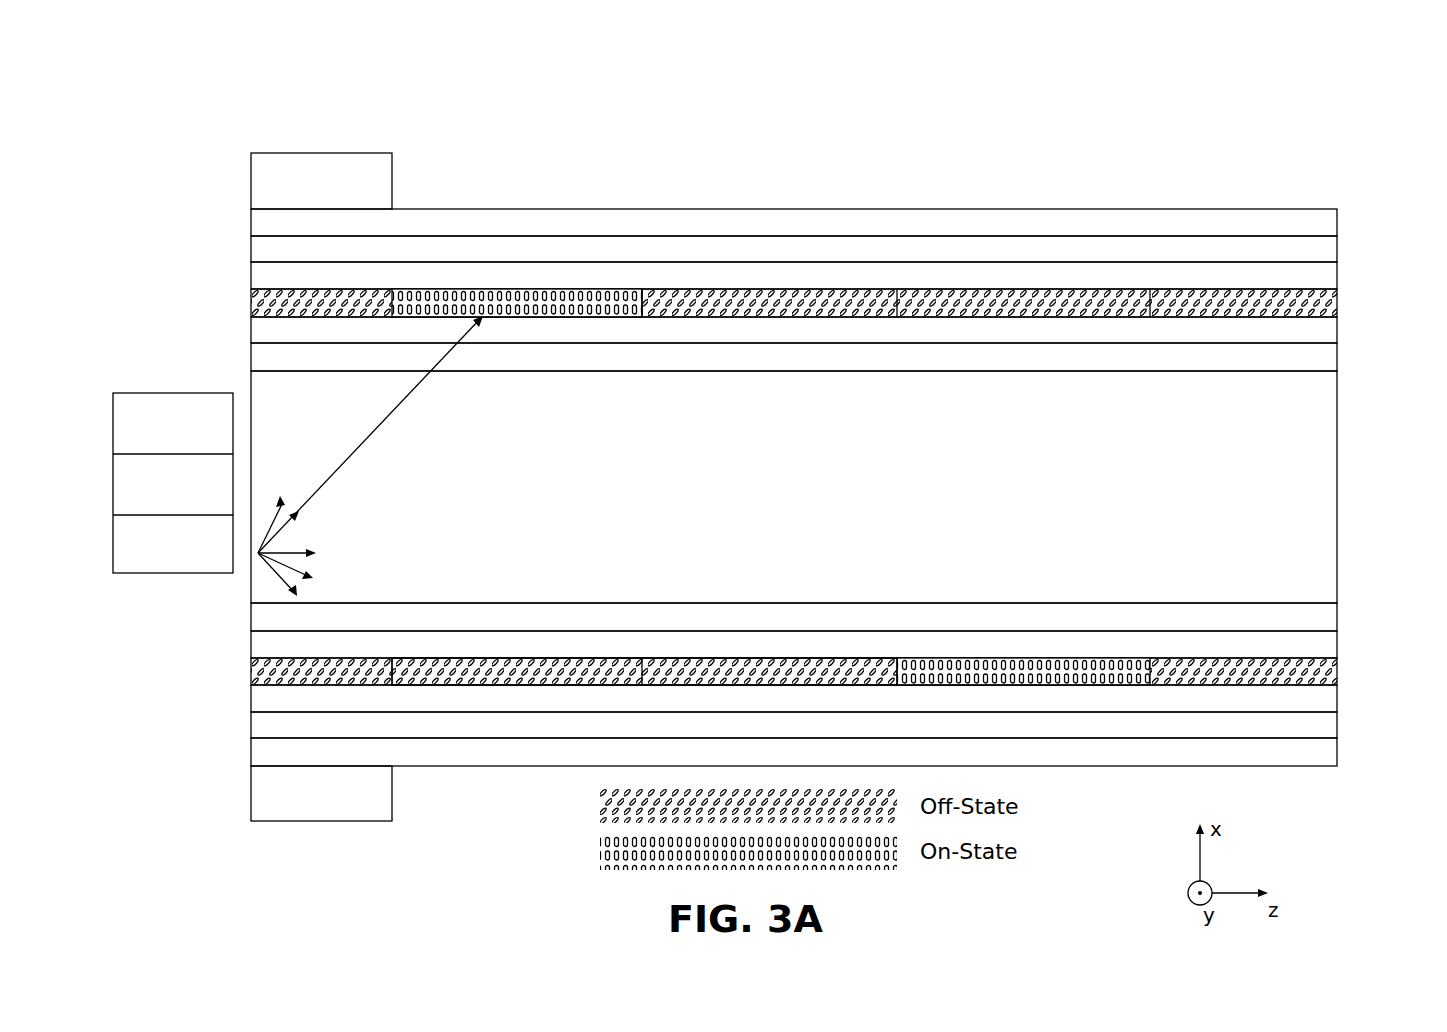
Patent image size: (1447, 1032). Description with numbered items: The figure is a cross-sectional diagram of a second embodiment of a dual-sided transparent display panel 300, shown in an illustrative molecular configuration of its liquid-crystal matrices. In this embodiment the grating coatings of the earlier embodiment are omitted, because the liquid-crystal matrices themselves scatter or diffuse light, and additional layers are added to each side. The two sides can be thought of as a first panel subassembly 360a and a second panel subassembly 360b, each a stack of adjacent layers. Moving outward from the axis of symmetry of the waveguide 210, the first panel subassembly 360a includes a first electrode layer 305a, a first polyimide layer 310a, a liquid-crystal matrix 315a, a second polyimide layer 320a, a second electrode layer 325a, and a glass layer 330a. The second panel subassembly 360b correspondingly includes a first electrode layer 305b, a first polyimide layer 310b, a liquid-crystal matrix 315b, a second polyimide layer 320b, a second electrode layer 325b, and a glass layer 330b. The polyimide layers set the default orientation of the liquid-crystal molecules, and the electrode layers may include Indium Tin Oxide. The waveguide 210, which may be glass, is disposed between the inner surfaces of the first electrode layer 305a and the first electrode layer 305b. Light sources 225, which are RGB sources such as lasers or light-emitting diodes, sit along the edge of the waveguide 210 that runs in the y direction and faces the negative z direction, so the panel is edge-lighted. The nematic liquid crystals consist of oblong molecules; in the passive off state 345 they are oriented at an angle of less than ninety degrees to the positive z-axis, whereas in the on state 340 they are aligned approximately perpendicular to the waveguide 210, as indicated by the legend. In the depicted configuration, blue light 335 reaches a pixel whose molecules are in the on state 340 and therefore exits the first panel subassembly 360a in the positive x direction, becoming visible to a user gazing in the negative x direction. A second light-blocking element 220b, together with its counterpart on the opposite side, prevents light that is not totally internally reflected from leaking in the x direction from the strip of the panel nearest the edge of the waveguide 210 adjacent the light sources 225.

The dual-sided transparent display panel 300 is at (890, 68).
The waveguide 210 is at (1193, 475).
The light sources 225 is at (152, 573).
The second light-blocking element 220b is at (392, 800).
The first electrode layer 305a is at (1337, 357).
The first polyimide layer 310a is at (1337, 330).
The liquid-crystal matrix 315a is at (837, 348).
The second polyimide layer 320a is at (1337, 276).
The second electrode layer 325a is at (1337, 249).
The glass layer 330a is at (1337, 222).
The first electrode layer 305b is at (1337, 617).
The first polyimide layer 310b is at (1337, 644).
The liquid-crystal matrix 315b is at (838, 620).
The second polyimide layer 320b is at (1337, 698).
The second electrode layer 325b is at (1337, 725).
The glass layer 330b is at (1337, 752).
The blue light 335 is at (290, 525).
The on state 340 is at (555, 318).
The off state 345 is at (698, 666).
The first panel subassembly 360a is at (239, 149).
The second panel subassembly 360b is at (239, 595).